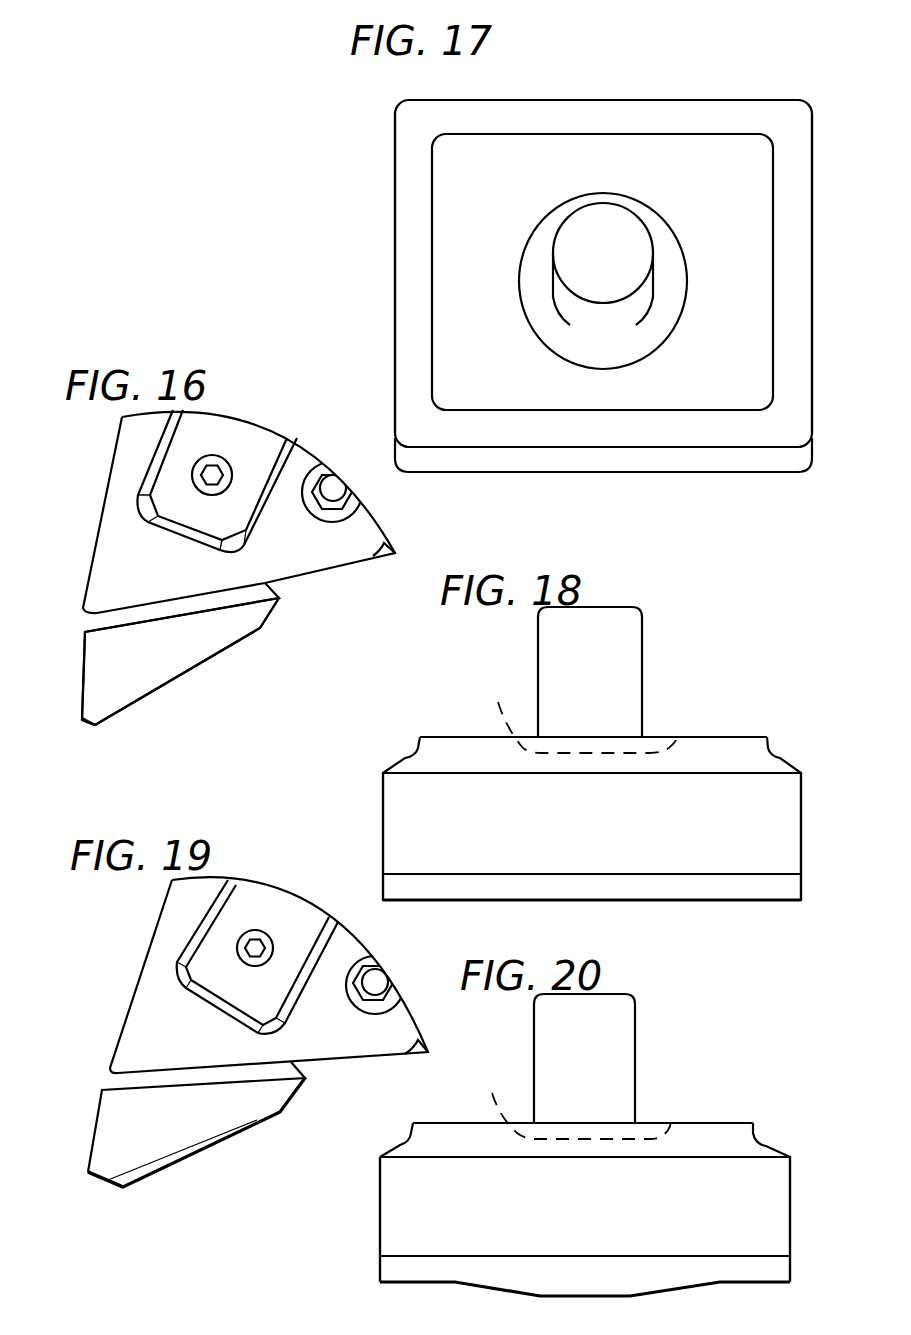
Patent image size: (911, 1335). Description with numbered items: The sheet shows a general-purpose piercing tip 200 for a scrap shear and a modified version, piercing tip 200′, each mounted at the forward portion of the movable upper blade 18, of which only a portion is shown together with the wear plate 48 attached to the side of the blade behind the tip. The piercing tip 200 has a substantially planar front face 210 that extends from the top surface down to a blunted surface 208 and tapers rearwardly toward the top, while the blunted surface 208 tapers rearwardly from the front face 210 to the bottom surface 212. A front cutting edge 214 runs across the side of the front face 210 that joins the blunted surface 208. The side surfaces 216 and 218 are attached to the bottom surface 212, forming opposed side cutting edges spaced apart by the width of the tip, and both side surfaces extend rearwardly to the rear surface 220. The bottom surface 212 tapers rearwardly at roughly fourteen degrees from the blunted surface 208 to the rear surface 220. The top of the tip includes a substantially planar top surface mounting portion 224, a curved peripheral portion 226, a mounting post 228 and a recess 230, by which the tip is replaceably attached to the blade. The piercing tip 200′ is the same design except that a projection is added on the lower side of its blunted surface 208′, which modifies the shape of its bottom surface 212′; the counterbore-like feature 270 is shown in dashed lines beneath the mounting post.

In FIG. 16, the movable blade 18 is at (110, 523).
In FIG. 19, the movable blade 18 is at (135, 997).
In FIG. 16, the wear plate 48 is at (262, 437).
In FIG. 19, the wear plate 48 is at (285, 905).
In FIG. 17, the piercing tip 200 is at (575, 277).
In FIG. 16, the piercing tip 200 is at (189, 682).
In FIG. 18, the piercing tip 200 is at (581, 769).
In FIG. 19, the piercing tip 200′ is at (162, 1127).
In FIG. 16, the blunted surface 208 is at (87, 727).
In FIG. 18, the blunted surface 208 is at (673, 888).
In FIG. 19, the blunted surface 208′ is at (107, 1183).
In FIG. 20, the blunted surface 208′ is at (665, 1275).
In FIG. 17, the front face 210 is at (727, 460).
In FIG. 16, the front face 210 is at (80, 688).
In FIG. 18, the front face 210 is at (732, 837).
In FIG. 19, the front face 210 is at (93, 1142).
In FIG. 20, the front face 210 is at (482, 1232).
In FIG. 16, the bottom surface 212 is at (182, 680).
In FIG. 19, the bottom surface 212′ is at (172, 1160).
In FIG. 17, the front cutting edge 214 is at (518, 473).
In FIG. 16, the front cutting edge 214 is at (83, 723).
In FIG. 18, the front cutting edge 214 is at (493, 874).
In FIG. 20, the front cutting edge 214 is at (740, 1255).
In FIG. 17, the side surface 216 is at (813, 160).
In FIG. 16, the side surface 216 is at (137, 673).
In FIG. 18, the side surface 216 is at (802, 850).
In FIG. 20, the side surface 216 is at (792, 1190).
In FIG. 17, the side surface 218 is at (395, 315).
In FIG. 18, the side surface 218 is at (383, 797).
In FIG. 20, the side surface 218 is at (380, 1200).
In FIG. 17, the rear surface 220 is at (693, 100).
In FIG. 16, the rear surface 220 is at (272, 613).
In FIG. 17, the top surface mounting portion 224 is at (717, 187).
In FIG. 18, the top surface mounting portion 224 is at (731, 737).
In FIG. 20, the top surface mounting portion 224 is at (710, 1123).
In FIG. 17, the curved peripheral portion 226 is at (492, 112).
In FIG. 18, the curved peripheral portion 226 is at (388, 770).
In FIG. 20, the curved peripheral portion 226 is at (395, 1150).
In FIG. 17, the mounting post 228 is at (617, 257).
In FIG. 18, the mounting post 228 is at (548, 632).
In FIG. 20, the mounting post 228 is at (620, 1027).
In FIG. 17, the recess 230 is at (665, 322).
In FIG. 18, the recess 230 is at (568, 712).
In FIG. 20, the counterbore 270 is at (564, 1103).